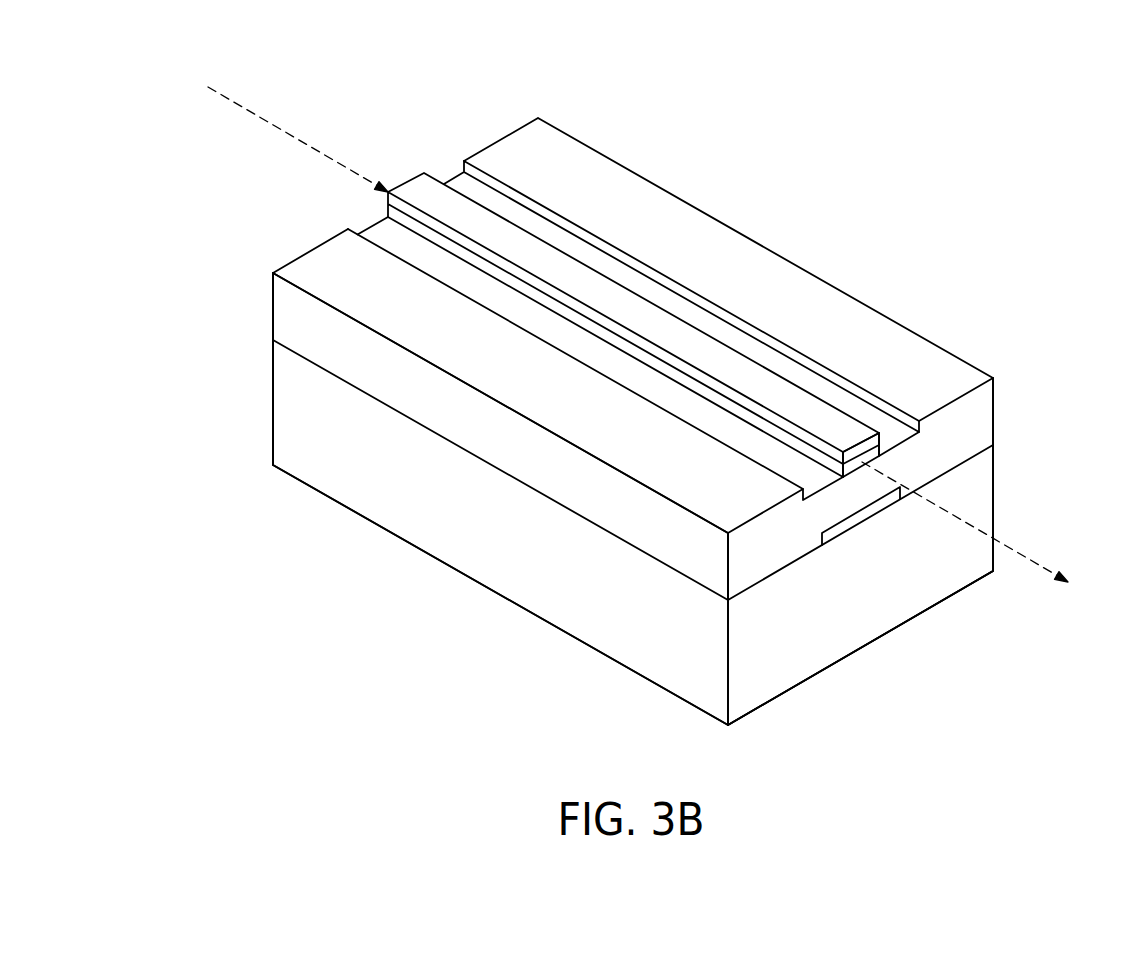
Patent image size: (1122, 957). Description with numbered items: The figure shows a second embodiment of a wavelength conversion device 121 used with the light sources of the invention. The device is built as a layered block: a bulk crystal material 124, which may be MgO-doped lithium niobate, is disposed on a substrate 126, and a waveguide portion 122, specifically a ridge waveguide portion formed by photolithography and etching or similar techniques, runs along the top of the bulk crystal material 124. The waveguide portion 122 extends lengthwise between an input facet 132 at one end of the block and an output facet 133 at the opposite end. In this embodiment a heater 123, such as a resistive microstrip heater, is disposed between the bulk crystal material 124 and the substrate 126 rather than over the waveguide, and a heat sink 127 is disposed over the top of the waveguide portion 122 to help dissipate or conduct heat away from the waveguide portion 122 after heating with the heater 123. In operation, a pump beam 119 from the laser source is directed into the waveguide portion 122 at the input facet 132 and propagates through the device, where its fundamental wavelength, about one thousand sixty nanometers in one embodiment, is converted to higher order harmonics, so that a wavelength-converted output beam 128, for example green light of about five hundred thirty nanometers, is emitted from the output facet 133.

The pump beam 119 is at (303, 141).
The wavelength conversion device 121 is at (857, 238).
The waveguide portion 122 is at (858, 470).
The heater 123 is at (832, 535).
The bulk crystal material 124 is at (512, 467).
The substrate 126 is at (347, 492).
The heat sink 127 is at (697, 350).
The wavelength-converted output beam 128 is at (1030, 558).
The input facet 132 is at (273, 297).
The output facet 133 is at (970, 418).